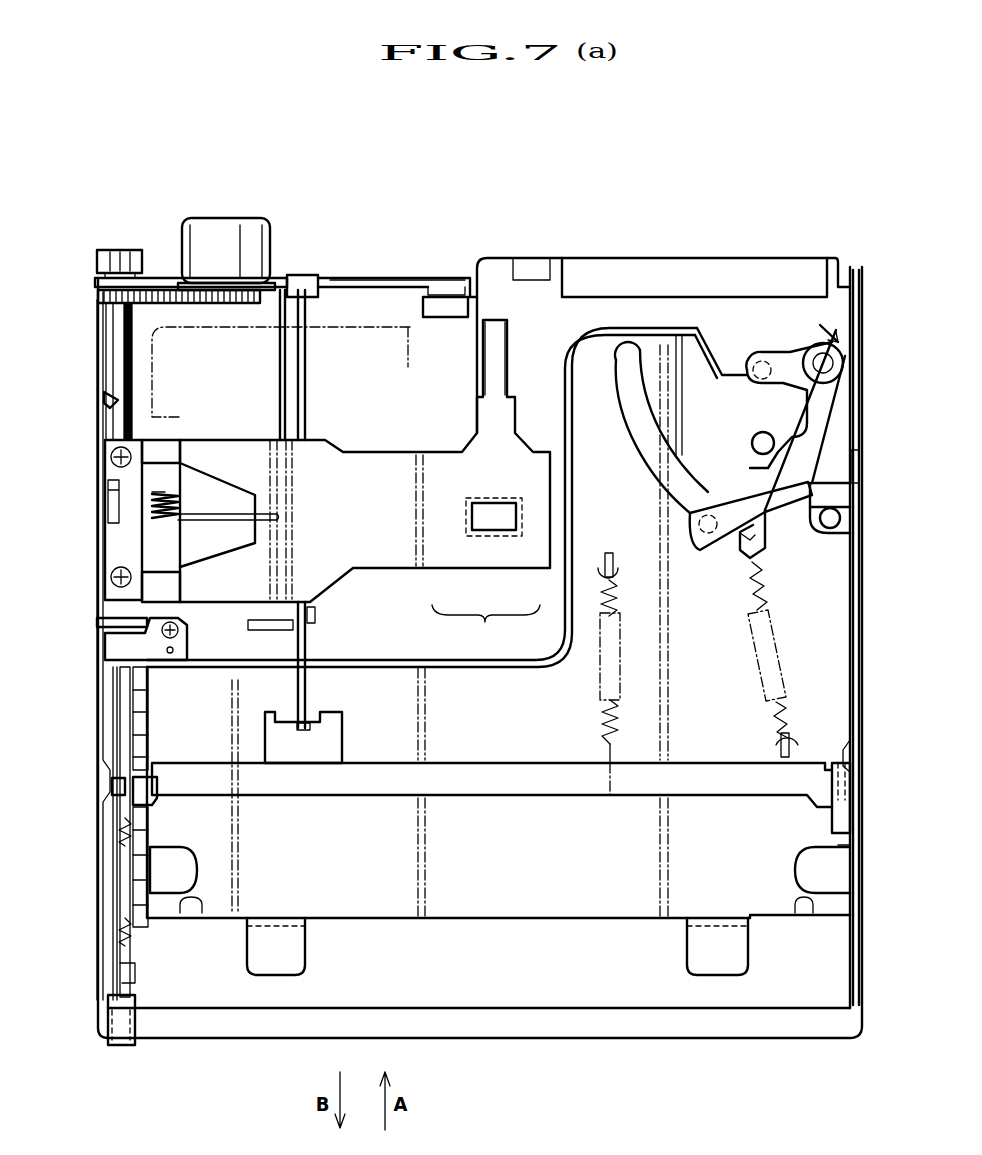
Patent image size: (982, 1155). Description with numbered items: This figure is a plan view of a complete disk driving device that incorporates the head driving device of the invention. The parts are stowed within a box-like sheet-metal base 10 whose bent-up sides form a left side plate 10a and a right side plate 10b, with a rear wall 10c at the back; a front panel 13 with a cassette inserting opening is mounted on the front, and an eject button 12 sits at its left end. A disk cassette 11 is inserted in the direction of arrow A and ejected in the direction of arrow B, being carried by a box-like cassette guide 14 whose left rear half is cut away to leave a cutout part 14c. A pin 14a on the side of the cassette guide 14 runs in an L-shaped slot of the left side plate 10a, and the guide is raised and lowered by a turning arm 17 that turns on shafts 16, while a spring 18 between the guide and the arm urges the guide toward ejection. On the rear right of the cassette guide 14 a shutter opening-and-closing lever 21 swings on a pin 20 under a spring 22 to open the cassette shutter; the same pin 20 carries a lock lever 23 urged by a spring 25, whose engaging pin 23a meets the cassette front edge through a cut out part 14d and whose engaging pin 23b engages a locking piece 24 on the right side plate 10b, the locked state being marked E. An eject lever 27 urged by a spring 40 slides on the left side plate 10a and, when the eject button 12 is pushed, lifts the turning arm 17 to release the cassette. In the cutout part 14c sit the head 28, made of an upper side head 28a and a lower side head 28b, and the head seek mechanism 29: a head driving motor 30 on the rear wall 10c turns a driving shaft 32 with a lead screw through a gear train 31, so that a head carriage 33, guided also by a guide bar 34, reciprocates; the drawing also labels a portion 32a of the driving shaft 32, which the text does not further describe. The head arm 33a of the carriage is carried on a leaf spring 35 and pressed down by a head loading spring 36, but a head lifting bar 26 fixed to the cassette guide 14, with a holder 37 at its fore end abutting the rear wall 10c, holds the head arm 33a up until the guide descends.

The base 10 is at (556, 330).
The left side plate 10a is at (103, 948).
The right side plate 10b is at (856, 985).
The rear wall 10c is at (403, 280).
The disk cassette 11 is at (365, 328).
The eject button 12 is at (126, 1046).
The front panel 13 is at (540, 1030).
The cassette guide 14 is at (390, 750).
The pin 14a is at (140, 716).
The cutout part 14c is at (456, 668).
The cut out part 14d is at (708, 326).
The shaft 16 is at (155, 790).
The turning arm 17 is at (484, 775).
The spring 18 is at (600, 655).
The pin 20 is at (814, 343).
The shutter opening-and-closing lever 21 is at (747, 494).
The spring 22 is at (765, 655).
The lock lever 23 is at (817, 403).
The engaging pin 23a is at (750, 352).
The engaging pin 23b is at (830, 532).
The locking piece 24 is at (837, 490).
The spring 25 is at (750, 467).
The head lifting bar 26 is at (300, 394).
The eject lever 27 is at (108, 866).
The head 28 is at (486, 627).
The upper side head 28a is at (478, 530).
The lower side head 28b is at (500, 535).
The head seek mechanism 29 is at (216, 418).
The head driving motor 30 is at (220, 246).
The gear train 31 is at (170, 290).
The driving shaft 32 is at (106, 343).
The engaging portion of screw shaft 32a is at (106, 405).
The head carriage 33 is at (342, 590).
The head arm 33a is at (384, 472).
The guide bar 34 is at (283, 352).
The leaf spring 35 is at (163, 453).
The head loading spring 36 is at (182, 502).
The holder 37 is at (305, 282).
The spring 40 is at (123, 814).
The locked state E is at (787, 556).